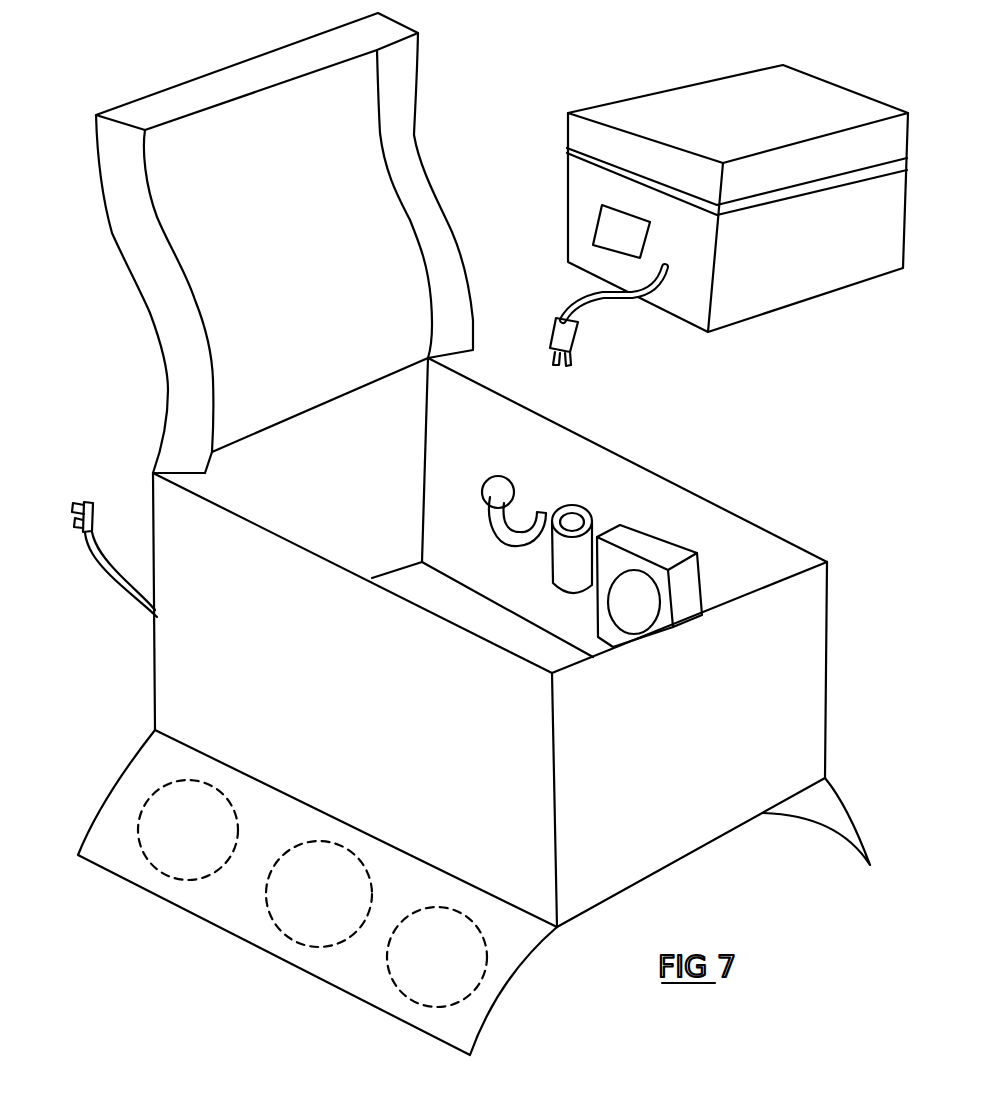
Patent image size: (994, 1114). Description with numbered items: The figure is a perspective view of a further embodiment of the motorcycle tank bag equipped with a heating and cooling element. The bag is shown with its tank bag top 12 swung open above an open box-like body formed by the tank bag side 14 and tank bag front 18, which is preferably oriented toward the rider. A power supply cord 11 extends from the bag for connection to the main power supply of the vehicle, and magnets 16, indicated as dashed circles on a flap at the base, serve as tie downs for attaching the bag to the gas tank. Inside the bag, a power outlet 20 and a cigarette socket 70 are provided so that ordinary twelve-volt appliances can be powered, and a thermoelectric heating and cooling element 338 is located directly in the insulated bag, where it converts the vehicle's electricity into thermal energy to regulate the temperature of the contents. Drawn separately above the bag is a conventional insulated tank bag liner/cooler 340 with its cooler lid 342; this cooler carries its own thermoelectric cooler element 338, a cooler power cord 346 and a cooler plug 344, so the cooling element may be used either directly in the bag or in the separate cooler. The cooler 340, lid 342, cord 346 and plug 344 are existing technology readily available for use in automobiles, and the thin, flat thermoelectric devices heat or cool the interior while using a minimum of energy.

The power supply cord 11 is at (92, 545).
The tank bag top 12 is at (410, 163).
The tank bag side 14 is at (705, 490).
The magnets 16 is at (190, 827).
The tank bag front 18 is at (677, 818).
The power outlet 20 is at (513, 480).
The cigarette socket 70 is at (573, 523).
The thermoelectric heating and cooling element 338 is at (670, 555).
The insulated tank bag liner/cooler 340 is at (750, 300).
The cooler lid 342 is at (695, 95).
The cooler plug 344 is at (552, 332).
The cooler power cord 346 is at (583, 290).